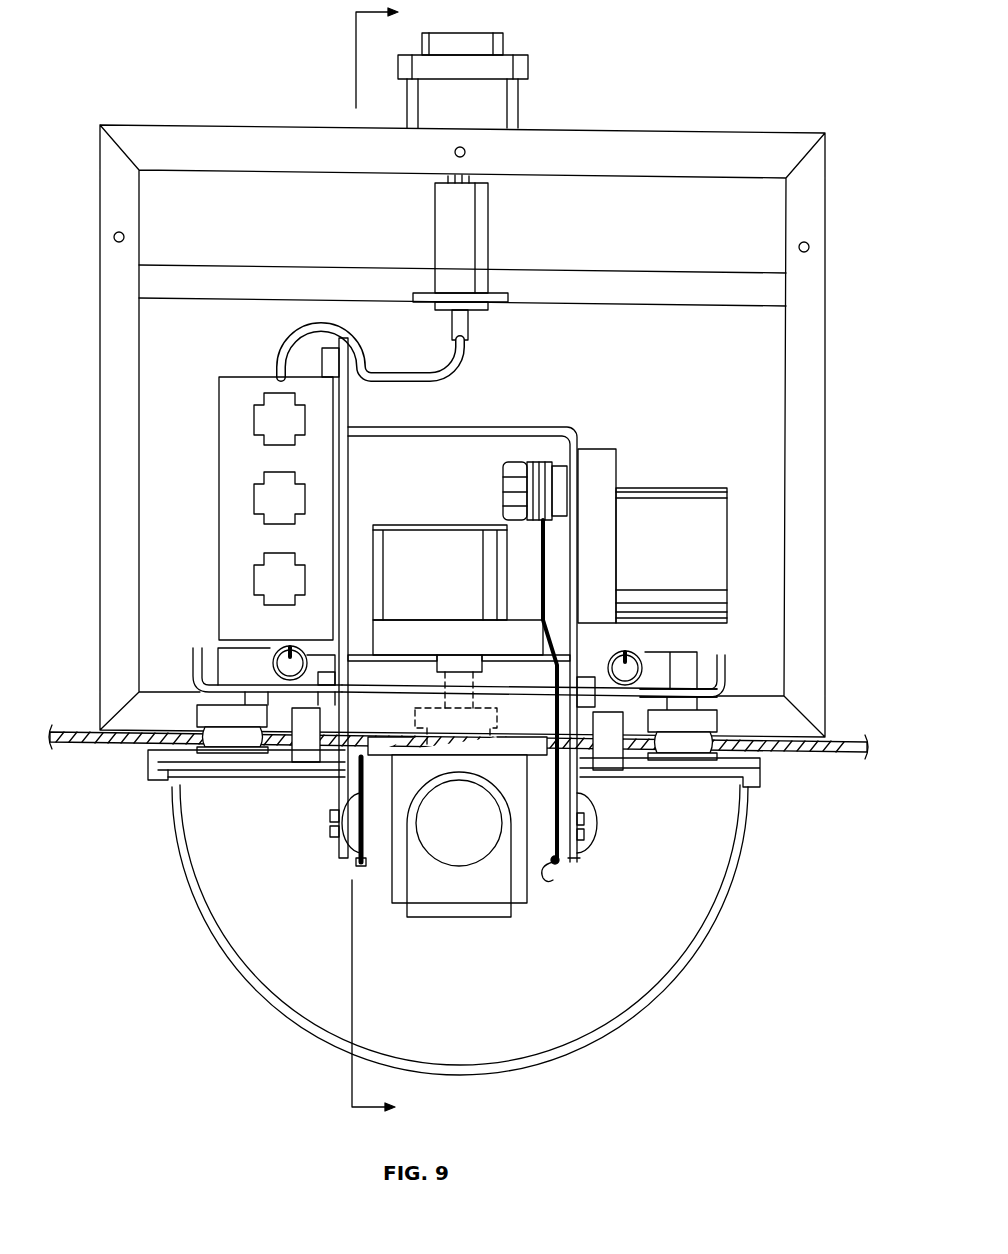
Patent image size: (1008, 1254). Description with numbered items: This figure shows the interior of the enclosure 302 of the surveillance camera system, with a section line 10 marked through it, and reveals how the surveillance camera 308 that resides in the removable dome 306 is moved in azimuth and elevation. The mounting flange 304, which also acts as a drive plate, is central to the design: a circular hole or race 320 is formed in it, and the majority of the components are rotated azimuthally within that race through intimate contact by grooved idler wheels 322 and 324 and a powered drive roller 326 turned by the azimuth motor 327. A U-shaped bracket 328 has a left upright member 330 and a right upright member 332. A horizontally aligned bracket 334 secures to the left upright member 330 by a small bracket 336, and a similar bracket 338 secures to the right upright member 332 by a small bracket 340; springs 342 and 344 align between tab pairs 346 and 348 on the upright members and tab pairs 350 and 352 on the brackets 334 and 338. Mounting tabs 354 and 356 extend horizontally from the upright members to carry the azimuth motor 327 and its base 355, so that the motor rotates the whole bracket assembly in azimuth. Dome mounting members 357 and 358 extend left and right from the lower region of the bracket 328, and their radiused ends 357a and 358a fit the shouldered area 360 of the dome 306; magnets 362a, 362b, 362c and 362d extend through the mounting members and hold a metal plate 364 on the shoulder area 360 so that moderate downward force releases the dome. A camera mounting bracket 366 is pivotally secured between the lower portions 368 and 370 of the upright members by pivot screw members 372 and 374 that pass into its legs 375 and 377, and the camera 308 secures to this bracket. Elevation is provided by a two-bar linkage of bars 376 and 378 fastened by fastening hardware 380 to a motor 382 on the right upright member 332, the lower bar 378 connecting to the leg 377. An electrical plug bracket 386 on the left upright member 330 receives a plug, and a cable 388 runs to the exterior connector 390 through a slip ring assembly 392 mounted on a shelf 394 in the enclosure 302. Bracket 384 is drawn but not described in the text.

The section line 10 is at (395, 560).
The enclosure 302 is at (825, 368).
The mounting flange 304 is at (825, 740).
The removable dome 306 is at (697, 957).
The surveillance camera 308 is at (460, 867).
The circular hole or race 320 is at (197, 735).
The grooved idler wheel 322 is at (217, 713).
The grooved idler wheel 324 is at (710, 725).
The powered drive roller 326 is at (497, 725).
The azimuth motor 327 is at (452, 525).
The U-shaped bracket 328 is at (463, 430).
The left upright member 330 is at (343, 467).
The right upright member 332 is at (573, 457).
The horizontally aligned bracket 334 is at (228, 678).
The small bracket 336 is at (333, 678).
The horizontally aligned bracket 338 is at (693, 677).
The small bracket 340 is at (580, 677).
The spring 342 is at (245, 678).
The spring 344 is at (670, 687).
The tab pair 346 is at (308, 653).
The tab pair 348 is at (593, 657).
The tab pair 350 is at (197, 650).
The tab pair 352 is at (727, 665).
The mounting tab 354 is at (362, 660).
The base 355 is at (437, 652).
The mounting tab 356 is at (547, 660).
The dome mounting member 357 is at (212, 762).
The end of dome mounting member 357a is at (150, 765).
The dome mounting member 358 is at (708, 772).
The end of dome mounting member 358a is at (757, 773).
The shouldered area 360 is at (757, 787).
The magnet 362a is at (290, 767).
The magnet 362b is at (310, 753).
The magnet 362c is at (608, 760).
The magnet 362d is at (610, 760).
The metal plate 364 is at (190, 768).
The camera mounting bracket 366 is at (417, 737).
The lower portion of left upright member 368 is at (338, 852).
The lower portion of right upright member 370 is at (573, 860).
The pivot screw member 372 is at (330, 815).
The pivot screw member 374 is at (583, 837).
The leg of camera mounting bracket 375 is at (355, 867).
The bar 376 is at (540, 548).
The leg of camera mounting bracket 377 is at (568, 876).
The lower bar 378 is at (545, 587).
The fastening hardware 380 is at (488, 482).
The motor 382 is at (727, 540).
The bracket 384 is at (608, 478).
The electrical plug bracket 386 is at (230, 452).
The cable 388 is at (280, 338).
The exterior connector 390 is at (518, 100).
The slip ring assembly 392 is at (480, 228).
The shelf 394 is at (617, 310).